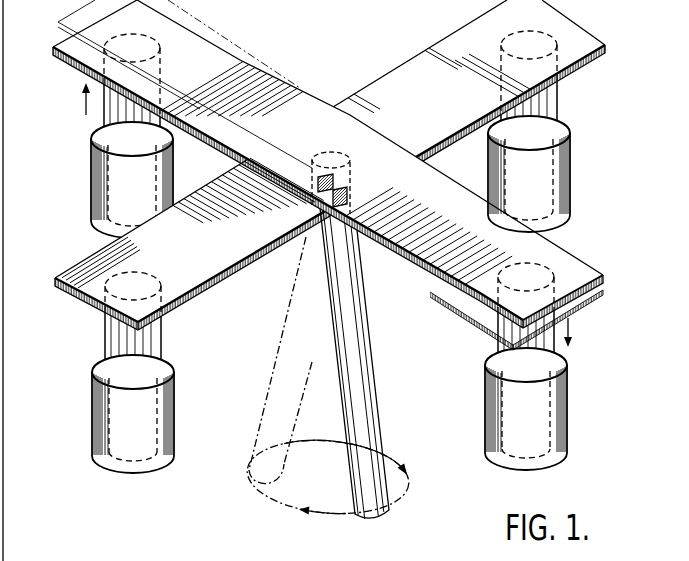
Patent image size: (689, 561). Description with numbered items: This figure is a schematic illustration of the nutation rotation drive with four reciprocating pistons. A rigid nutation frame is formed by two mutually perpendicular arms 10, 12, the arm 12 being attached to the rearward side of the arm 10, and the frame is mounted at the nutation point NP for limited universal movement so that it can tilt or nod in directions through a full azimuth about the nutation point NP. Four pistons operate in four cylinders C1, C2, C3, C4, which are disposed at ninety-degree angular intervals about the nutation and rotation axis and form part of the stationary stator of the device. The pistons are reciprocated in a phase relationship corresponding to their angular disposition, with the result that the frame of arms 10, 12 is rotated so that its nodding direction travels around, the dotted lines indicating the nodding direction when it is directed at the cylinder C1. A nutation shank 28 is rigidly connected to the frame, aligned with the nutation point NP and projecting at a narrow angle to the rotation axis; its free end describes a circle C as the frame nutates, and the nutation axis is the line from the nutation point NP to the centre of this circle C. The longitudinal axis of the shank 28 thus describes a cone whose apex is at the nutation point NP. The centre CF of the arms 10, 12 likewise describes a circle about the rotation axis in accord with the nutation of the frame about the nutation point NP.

The arm 10 is at (490, 260).
The arm 12 is at (440, 111).
The nutation shank 28 is at (358, 373).
The cylinder C1 is at (576, 405).
The cylinder C2 is at (92, 394).
The cylinder C3 is at (100, 174).
The cylinder C4 is at (562, 178).
The centre of arms CF is at (337, 157).
The nutation point NP is at (331, 219).
The circle C is at (403, 483).